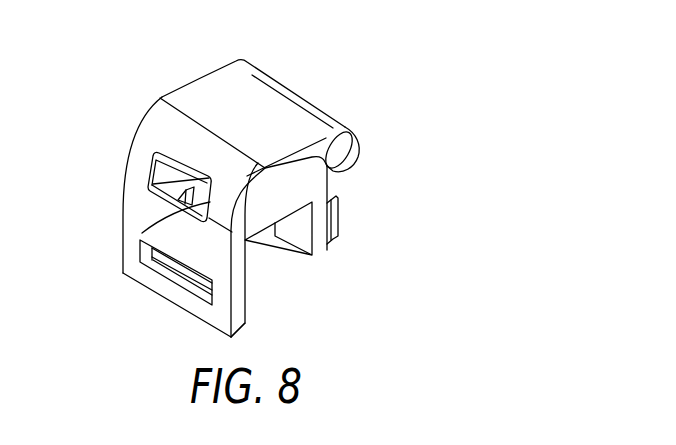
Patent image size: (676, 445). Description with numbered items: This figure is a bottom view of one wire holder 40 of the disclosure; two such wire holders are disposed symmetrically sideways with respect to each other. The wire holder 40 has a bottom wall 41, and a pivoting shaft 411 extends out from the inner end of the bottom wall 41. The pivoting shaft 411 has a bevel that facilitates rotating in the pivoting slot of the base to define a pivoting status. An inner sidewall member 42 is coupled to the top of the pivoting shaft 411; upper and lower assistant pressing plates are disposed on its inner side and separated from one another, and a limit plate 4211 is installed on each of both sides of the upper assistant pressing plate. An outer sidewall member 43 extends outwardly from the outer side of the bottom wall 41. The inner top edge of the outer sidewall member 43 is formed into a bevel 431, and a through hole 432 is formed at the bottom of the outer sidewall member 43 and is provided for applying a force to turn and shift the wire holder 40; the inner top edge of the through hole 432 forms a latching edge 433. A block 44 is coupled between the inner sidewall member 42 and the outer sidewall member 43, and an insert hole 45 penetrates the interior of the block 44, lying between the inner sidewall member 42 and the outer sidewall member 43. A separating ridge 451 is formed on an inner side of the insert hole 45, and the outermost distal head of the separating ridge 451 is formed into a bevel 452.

The wire holder 40 is at (291, 185).
The bottom wall 41 is at (220, 69).
The pivoting shaft 411 is at (336, 155).
The inner sidewall member 42 is at (330, 232).
The limit plate 4211 is at (338, 214).
The outer sidewall member 43 is at (142, 212).
The bevel 431 is at (245, 323).
The through hole 432 is at (165, 274).
The latching edge 433 is at (168, 270).
The block 44 is at (268, 205).
The insert hole 45 is at (165, 163).
The separating ridge 451 is at (142, 233).
The bevel 452 is at (196, 192).